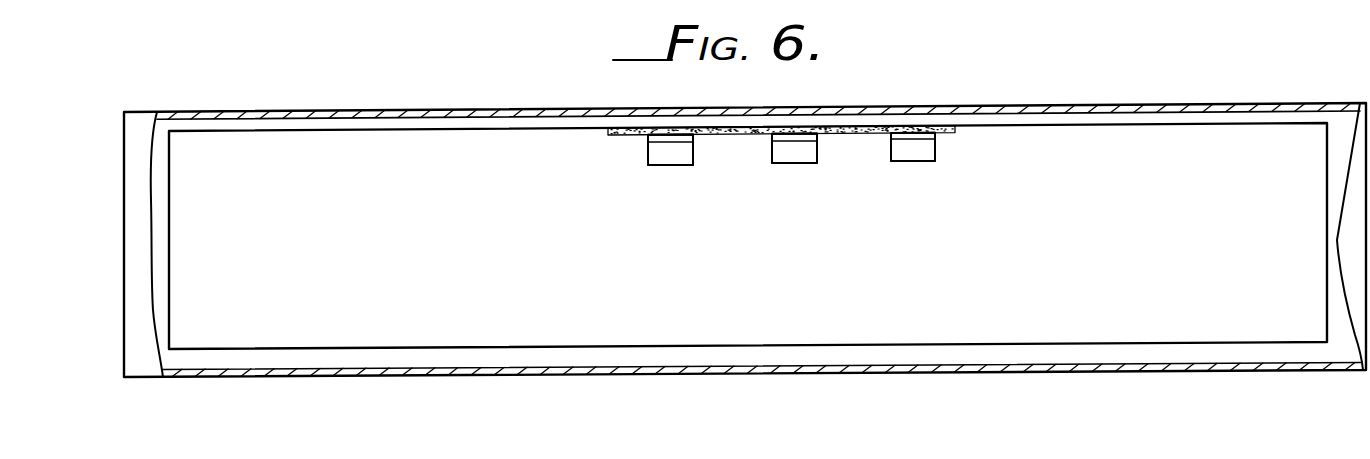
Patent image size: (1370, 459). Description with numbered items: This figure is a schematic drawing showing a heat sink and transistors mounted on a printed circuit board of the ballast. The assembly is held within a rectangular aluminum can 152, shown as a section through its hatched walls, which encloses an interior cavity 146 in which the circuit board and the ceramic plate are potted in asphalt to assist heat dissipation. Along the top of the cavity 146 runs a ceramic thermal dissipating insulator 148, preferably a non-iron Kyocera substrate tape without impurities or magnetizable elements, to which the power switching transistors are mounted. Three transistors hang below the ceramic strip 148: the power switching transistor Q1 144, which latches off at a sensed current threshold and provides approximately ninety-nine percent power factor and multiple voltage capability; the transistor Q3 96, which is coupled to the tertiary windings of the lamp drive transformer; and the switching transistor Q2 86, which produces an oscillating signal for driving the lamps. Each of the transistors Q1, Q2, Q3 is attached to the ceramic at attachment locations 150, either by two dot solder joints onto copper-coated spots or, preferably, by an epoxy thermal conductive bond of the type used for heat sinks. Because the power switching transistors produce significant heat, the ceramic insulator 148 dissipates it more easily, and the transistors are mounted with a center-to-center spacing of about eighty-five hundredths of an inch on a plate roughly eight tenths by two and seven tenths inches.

The housing 152 is at (570, 375).
The cavity 146 is at (402, 249).
The adhesive strip 148 is at (607, 139).
The pads 150 is at (648, 141).
The power switching transistor Q1 144 is at (668, 166).
The transistor Q3 96 is at (792, 165).
The switching transistor Q2 86 is at (912, 163).
The power switching transistor Q1 is at (680, 164).
The switching transistor Q2 is at (925, 164).
The transistor Q3 is at (804, 166).